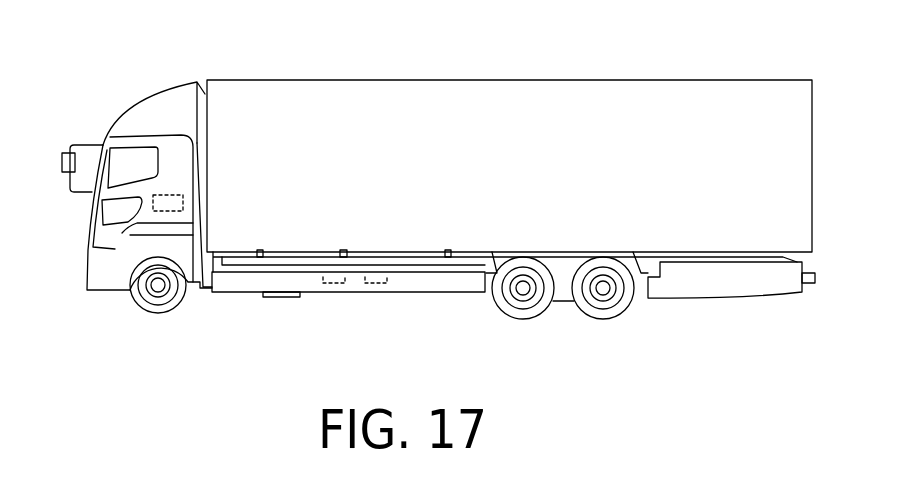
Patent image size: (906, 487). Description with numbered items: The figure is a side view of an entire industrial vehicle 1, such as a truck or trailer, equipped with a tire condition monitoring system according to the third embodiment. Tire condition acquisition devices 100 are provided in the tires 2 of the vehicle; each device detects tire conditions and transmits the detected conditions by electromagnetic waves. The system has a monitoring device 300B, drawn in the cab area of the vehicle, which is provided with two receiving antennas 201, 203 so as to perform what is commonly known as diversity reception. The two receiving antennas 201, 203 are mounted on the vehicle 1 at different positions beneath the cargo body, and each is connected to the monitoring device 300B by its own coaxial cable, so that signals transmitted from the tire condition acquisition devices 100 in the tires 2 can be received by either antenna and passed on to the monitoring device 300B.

The industrial vehicle 1 is at (443, 80).
The tire 2 is at (163, 313).
The tire condition acquisition device 100 is at (188, 302).
The receiving antenna 201 is at (337, 283).
The receiving antenna 203 is at (380, 283).
The monitoring device 300B is at (153, 212).